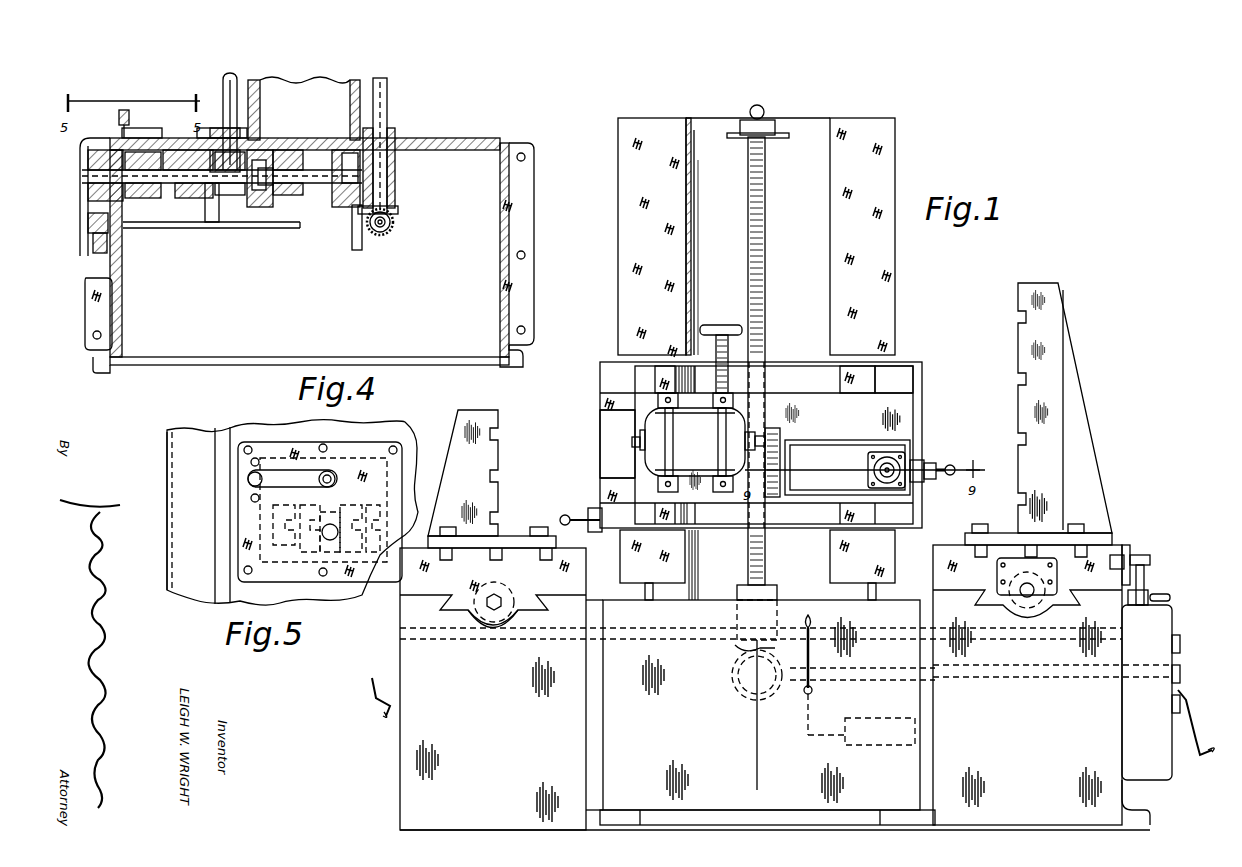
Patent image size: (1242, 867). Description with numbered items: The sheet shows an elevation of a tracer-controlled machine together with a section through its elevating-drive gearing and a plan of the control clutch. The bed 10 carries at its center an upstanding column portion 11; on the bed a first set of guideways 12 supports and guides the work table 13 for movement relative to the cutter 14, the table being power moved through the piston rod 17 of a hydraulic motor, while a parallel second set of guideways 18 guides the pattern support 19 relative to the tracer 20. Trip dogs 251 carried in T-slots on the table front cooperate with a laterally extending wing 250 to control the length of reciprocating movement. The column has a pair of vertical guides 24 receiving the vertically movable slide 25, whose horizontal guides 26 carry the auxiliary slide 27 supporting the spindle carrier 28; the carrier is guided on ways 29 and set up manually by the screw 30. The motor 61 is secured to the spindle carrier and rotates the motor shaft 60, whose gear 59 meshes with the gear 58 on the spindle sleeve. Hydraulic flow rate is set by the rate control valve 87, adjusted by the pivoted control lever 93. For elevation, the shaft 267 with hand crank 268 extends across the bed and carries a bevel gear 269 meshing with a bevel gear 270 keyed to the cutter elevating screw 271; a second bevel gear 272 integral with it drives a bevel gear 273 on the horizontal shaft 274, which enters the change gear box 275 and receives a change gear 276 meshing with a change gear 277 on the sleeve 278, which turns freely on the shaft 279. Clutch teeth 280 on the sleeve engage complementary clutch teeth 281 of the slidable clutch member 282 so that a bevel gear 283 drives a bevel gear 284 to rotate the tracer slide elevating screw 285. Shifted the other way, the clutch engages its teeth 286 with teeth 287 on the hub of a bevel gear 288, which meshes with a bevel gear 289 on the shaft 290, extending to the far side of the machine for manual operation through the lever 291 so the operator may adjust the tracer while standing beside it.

In FIG. 1, the bed 10 is at (551, 517).
In FIG. 4, the column portion 11 is at (372, 75).
In FIG. 1, the column portion 11 is at (800, 118).
In FIG. 1, the first set of guideways 12 is at (1075, 605).
In FIG. 1, the work table 13 is at (1105, 545).
In FIG. 1, the cutter 14 is at (950, 462).
In FIG. 1, the piston rod 17 is at (1027, 595).
In FIG. 1, the second set of guideways 18 is at (440, 605).
In FIG. 1, the pattern support 19 is at (400, 597).
In FIG. 1, the tracer 20 is at (578, 512).
In FIG. 1, the vertical guides 24 is at (650, 110).
In FIG. 1, the vertically movable slide 25 is at (920, 365).
In FIG. 1, the horizontal guides 26 is at (598, 400).
In FIG. 1, the auxiliary slide 27 is at (900, 380).
In FIG. 1, the spindle carrier 28 is at (905, 405).
In FIG. 1, the ways 29 is at (660, 360).
In FIG. 1, the screw 30 is at (680, 335).
In FIG. 1, the gear 58 is at (770, 497).
In FIG. 1, the gear 59 is at (780, 440).
In FIG. 1, the motor shaft 60 is at (765, 440).
In FIG. 1, the motor 61 is at (655, 455).
In FIG. 1, the rate control valve 87 is at (882, 706).
In FIG. 1, the control lever 93 is at (812, 630).
In FIG. 1, the wing 250 is at (1152, 572).
In FIG. 1, the trip dogs 251 is at (1148, 560).
In FIG. 4, the shaft 267 is at (394, 222).
In FIG. 1, the shaft 267 is at (960, 677).
In FIG. 1, the hand crank 268 is at (1195, 715).
In FIG. 4, the bevel gear 269 is at (390, 232).
In FIG. 4, the bevel gear 270 is at (398, 210).
In FIG. 4, the elevating screw 271 is at (388, 95).
In FIG. 1, the elevating screw 271 is at (766, 178).
In FIG. 4, the second bevel gear 272 is at (313, 255).
In FIG. 4, the bevel gear 273 is at (358, 250).
In FIG. 4, the horizontal shaft 274 is at (172, 232).
In FIG. 4, the change gear box 275 is at (84, 282).
In FIG. 4, the change gear 276 is at (88, 240).
In FIG. 4, the change gear 277 is at (80, 142).
In FIG. 4, the sleeve 278 is at (88, 178).
In FIG. 4, the shaft 279 is at (273, 177).
In FIG. 4, the clutch teeth 280 is at (135, 200).
In FIG. 5, the clutch teeth 280 is at (290, 555).
In FIG. 4, the clutch teeth 281 is at (170, 198).
In FIG. 5, the clutch teeth 281 is at (305, 552).
In FIG. 4, the slidable clutch member 282 is at (198, 198).
In FIG. 5, the slidable clutch member 282 is at (340, 555).
In FIG. 4, the bevel gear 283 is at (270, 196).
In FIG. 4, the bevel gear 284 is at (200, 138).
In FIG. 4, the tracer slide elevating screw 285 is at (238, 88).
In FIG. 4, the teeth 286 is at (136, 124).
In FIG. 5, the teeth 286 is at (345, 520).
In FIG. 4, the teeth 287 is at (162, 130).
In FIG. 5, the teeth 287 is at (372, 505).
In FIG. 4, the bevel gear 288 is at (218, 222).
In FIG. 4, the bevel gear 289 is at (235, 195).
In FIG. 1, the shaft 290 is at (440, 645).
In FIG. 1, the lever 291 is at (370, 690).